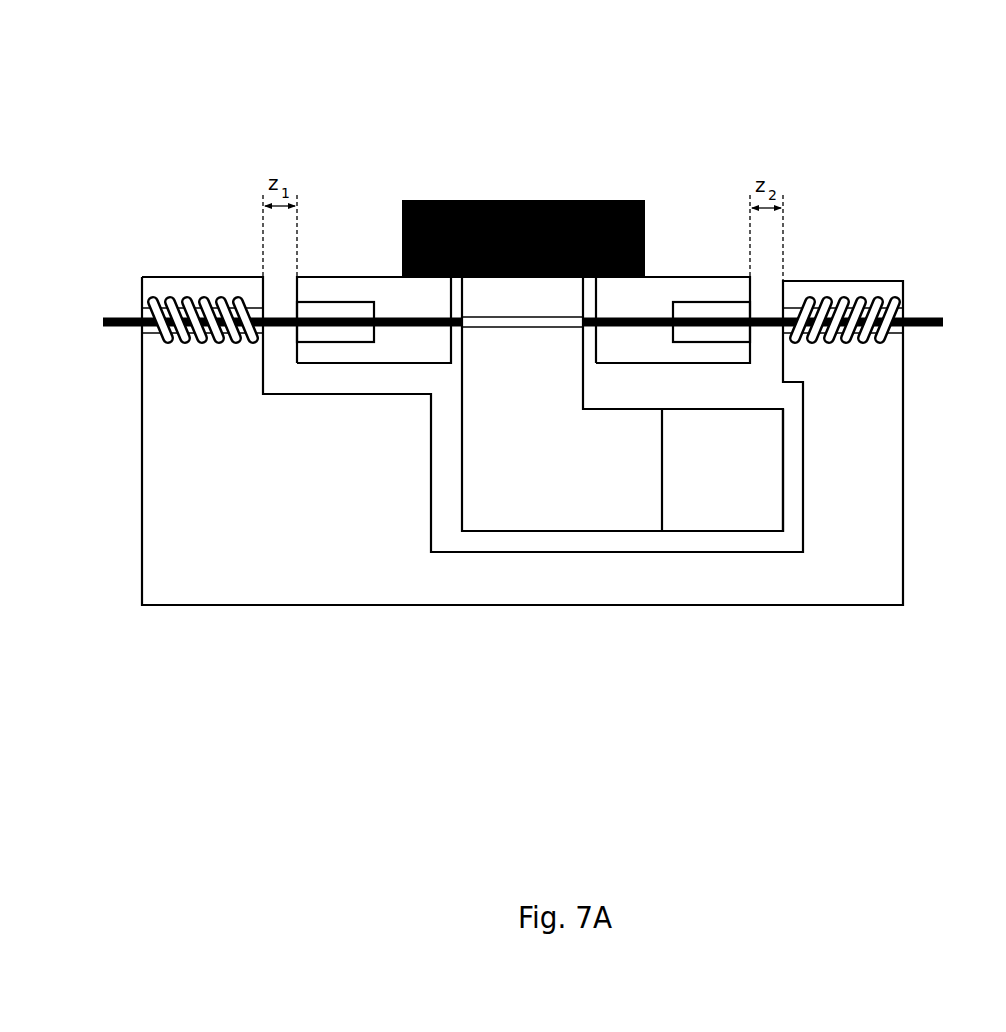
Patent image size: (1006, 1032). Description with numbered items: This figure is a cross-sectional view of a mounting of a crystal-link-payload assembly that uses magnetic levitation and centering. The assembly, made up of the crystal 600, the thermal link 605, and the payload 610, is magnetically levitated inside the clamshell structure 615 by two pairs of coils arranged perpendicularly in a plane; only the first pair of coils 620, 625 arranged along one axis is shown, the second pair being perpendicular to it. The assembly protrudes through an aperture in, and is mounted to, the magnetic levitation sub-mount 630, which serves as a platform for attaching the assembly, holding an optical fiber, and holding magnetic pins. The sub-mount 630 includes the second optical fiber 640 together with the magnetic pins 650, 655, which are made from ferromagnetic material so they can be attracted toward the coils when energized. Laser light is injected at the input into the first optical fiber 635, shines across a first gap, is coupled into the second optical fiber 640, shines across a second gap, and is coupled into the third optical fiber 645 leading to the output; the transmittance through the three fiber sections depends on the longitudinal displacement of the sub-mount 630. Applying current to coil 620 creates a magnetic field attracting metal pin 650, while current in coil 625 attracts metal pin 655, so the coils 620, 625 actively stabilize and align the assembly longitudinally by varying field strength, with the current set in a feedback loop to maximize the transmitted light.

The crystal 600 is at (727, 488).
The thermal link 605 is at (550, 488).
The payload 610 is at (555, 188).
The clamshell structure 615 is at (312, 527).
The coil 620 is at (196, 285).
The coil 625 is at (849, 287).
The magnetic levitation sub-mount 630 is at (313, 263).
The first optical fiber 635 is at (114, 302).
The second optical fiber 640 is at (390, 303).
The third optical fiber 645 is at (933, 303).
The magnetic pin 650 is at (355, 288).
The magnetic pin 655 is at (707, 288).